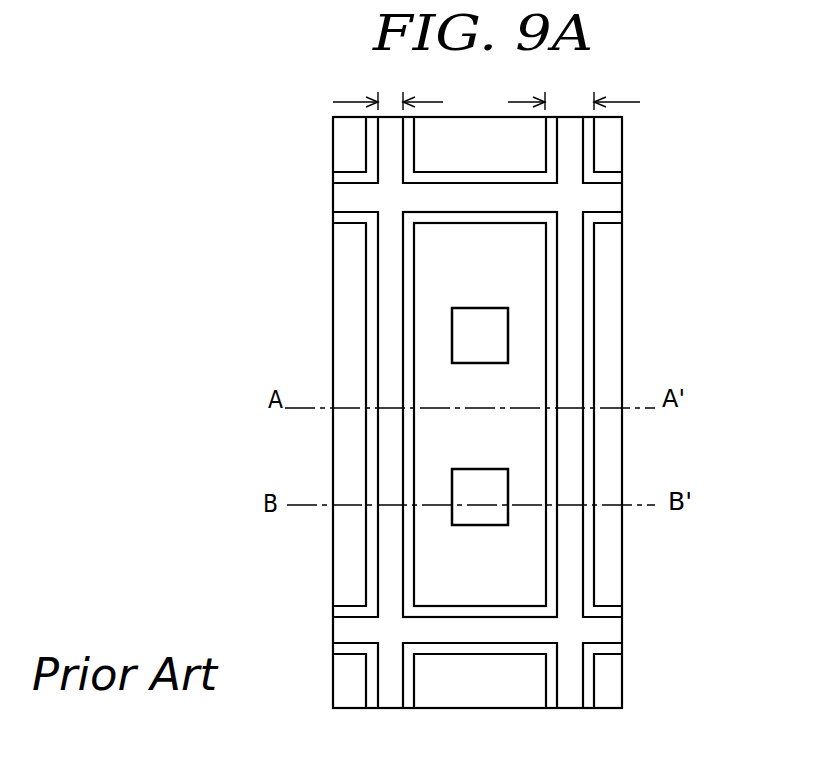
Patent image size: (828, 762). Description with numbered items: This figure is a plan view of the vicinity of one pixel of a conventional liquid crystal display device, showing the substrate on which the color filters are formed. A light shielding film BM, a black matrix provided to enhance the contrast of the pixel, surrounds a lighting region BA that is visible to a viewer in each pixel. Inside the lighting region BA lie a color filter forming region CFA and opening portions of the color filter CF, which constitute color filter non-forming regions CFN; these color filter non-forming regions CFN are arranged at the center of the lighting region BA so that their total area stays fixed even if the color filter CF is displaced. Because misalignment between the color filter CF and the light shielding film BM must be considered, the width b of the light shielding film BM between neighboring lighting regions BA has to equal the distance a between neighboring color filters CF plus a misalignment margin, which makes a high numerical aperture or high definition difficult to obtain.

The light shielding film BM is at (447, 412).
The color filter forming region CFA is at (517, 412).
The color filter non-forming region CFN is at (554, 414).
The lighting region BA is at (508, 465).
The color filter CF is at (572, 416).
The distance between neighboring color filters a is at (388, 89).
The width between neighboring lighting regions b is at (574, 88).